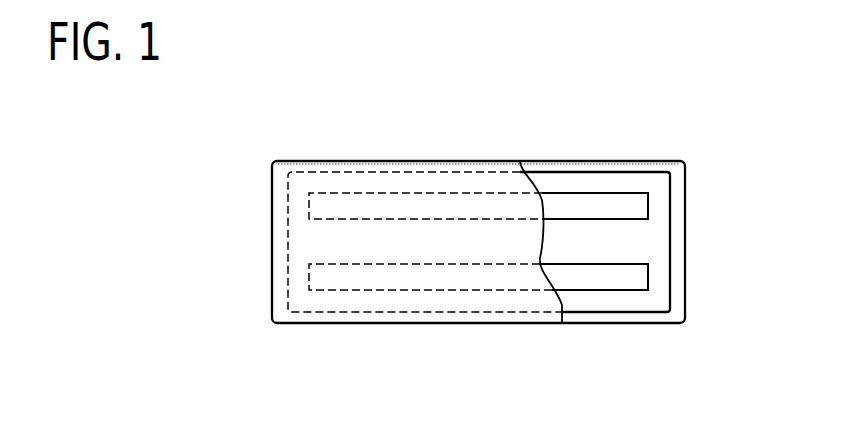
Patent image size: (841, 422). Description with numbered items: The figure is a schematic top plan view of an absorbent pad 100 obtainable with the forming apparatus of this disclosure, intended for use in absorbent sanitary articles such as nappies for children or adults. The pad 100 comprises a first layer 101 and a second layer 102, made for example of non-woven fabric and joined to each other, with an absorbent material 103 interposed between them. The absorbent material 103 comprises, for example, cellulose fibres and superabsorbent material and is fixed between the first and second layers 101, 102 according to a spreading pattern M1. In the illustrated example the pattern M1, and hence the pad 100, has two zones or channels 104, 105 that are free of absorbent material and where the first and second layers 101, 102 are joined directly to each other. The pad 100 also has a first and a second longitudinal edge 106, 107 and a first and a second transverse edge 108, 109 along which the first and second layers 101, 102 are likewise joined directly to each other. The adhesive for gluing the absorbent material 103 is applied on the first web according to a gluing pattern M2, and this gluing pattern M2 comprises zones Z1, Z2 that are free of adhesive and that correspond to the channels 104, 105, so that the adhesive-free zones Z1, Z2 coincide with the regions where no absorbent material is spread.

The pad 100 is at (345, 130).
The first layer 101 is at (678, 272).
The second layer 102 is at (315, 242).
The absorbent material 103 is at (660, 248).
The zone or channel 104 is at (622, 212).
The zone or channel 105 is at (613, 275).
The first longitudinal edge 106 is at (429, 160).
The second longitudinal edge 107 is at (455, 322).
The first transverse edge 108 is at (272, 267).
The second transverse edge 109 is at (681, 283).
The spreading pattern M1 is at (463, 190).
The gluing pattern M2 is at (667, 205).
The zone free of adhesive Z1 is at (577, 208).
The zone free of adhesive Z2 is at (575, 273).